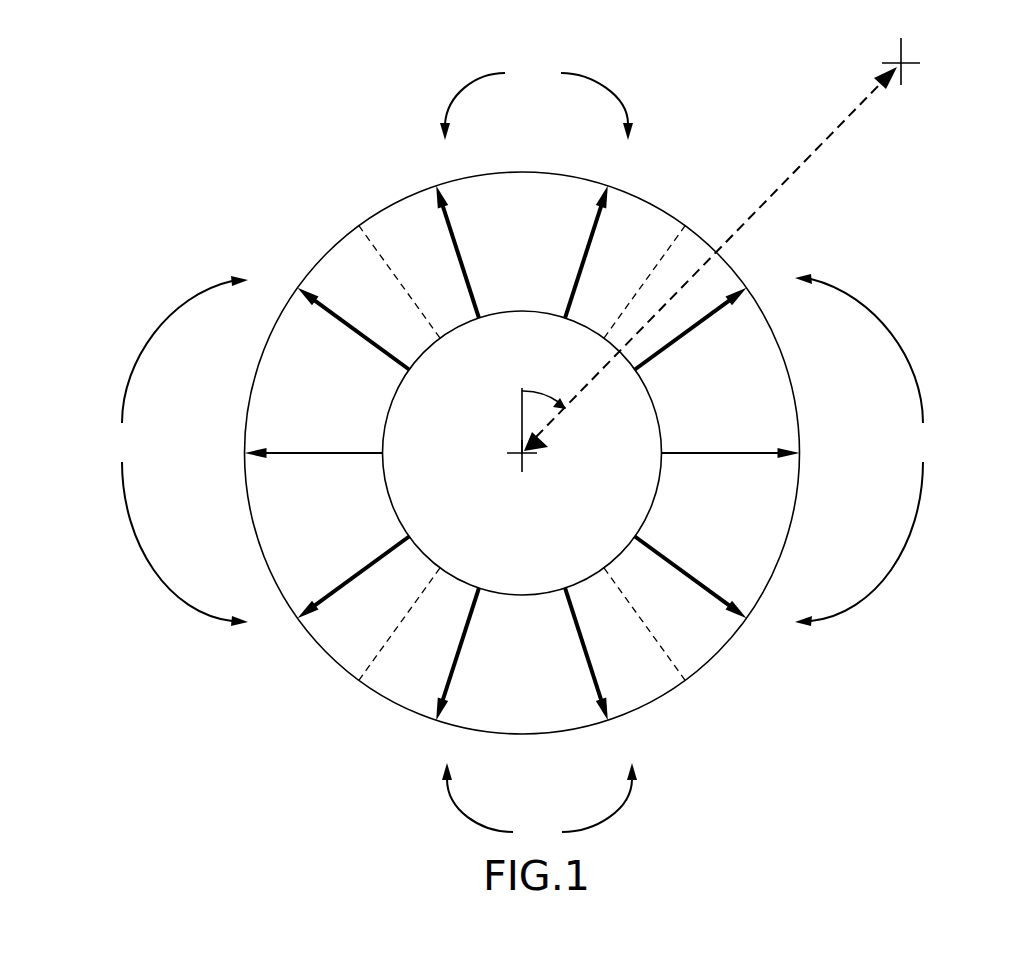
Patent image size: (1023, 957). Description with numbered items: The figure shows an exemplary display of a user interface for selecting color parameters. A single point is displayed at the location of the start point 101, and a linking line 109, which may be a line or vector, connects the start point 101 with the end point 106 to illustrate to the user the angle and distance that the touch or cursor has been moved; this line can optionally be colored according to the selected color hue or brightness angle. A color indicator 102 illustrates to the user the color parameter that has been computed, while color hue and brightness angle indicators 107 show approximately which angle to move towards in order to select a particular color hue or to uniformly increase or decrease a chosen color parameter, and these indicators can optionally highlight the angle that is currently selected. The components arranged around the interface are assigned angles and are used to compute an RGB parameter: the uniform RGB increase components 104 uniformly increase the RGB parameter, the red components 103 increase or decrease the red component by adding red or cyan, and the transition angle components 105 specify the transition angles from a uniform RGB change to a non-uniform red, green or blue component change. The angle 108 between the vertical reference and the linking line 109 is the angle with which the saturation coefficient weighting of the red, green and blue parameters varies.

The start point 101 is at (542, 468).
The color indicator 102 is at (522, 453).
The red component 103 is at (184, 453).
The uniform RGB increase components 104 is at (538, 453).
The transition angle components 105 is at (322, 196).
The end point 106 is at (924, 80).
The color hue and brightness angle indicators 107 is at (536, 452).
The angle 108 is at (548, 408).
The linking line 109 is at (710, 259).